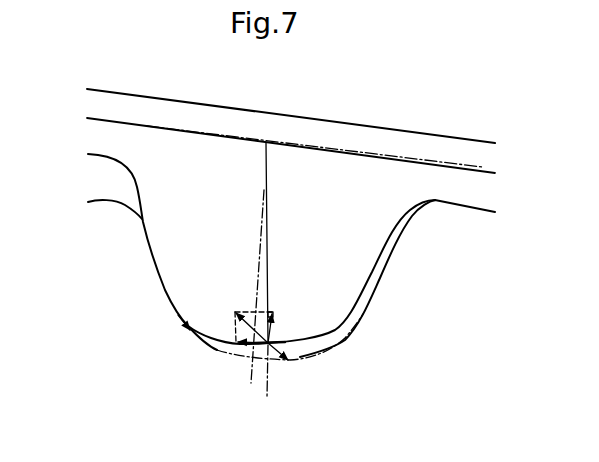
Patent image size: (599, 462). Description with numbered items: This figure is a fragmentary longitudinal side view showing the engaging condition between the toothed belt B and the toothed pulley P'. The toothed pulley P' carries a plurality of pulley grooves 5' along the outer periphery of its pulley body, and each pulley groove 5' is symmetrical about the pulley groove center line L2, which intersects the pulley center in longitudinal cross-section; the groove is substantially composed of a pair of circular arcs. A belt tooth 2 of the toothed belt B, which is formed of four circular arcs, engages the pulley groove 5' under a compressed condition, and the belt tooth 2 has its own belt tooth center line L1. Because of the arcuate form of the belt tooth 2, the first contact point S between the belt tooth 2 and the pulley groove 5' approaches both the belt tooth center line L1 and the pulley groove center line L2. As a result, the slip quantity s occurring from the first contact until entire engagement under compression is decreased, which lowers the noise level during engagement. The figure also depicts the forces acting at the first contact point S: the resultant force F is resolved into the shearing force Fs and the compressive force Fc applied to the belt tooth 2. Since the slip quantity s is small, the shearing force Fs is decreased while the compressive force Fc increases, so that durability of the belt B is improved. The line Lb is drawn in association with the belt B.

The toothed belt B is at (430, 133).
The center line of reference plane Lb is at (469, 164).
The toothed pulley P' is at (92, 188).
The belt tooth 2 is at (353, 293).
The pulley groove 5' is at (198, 313).
The belt tooth center line L1 is at (257, 253).
The pulley groove center line L2 is at (270, 237).
The resultant force F is at (245, 318).
The compressive force Fc is at (283, 318).
The shearing force Fs is at (245, 364).
The first contact point S is at (270, 347).
The slip quantity s is at (276, 352).